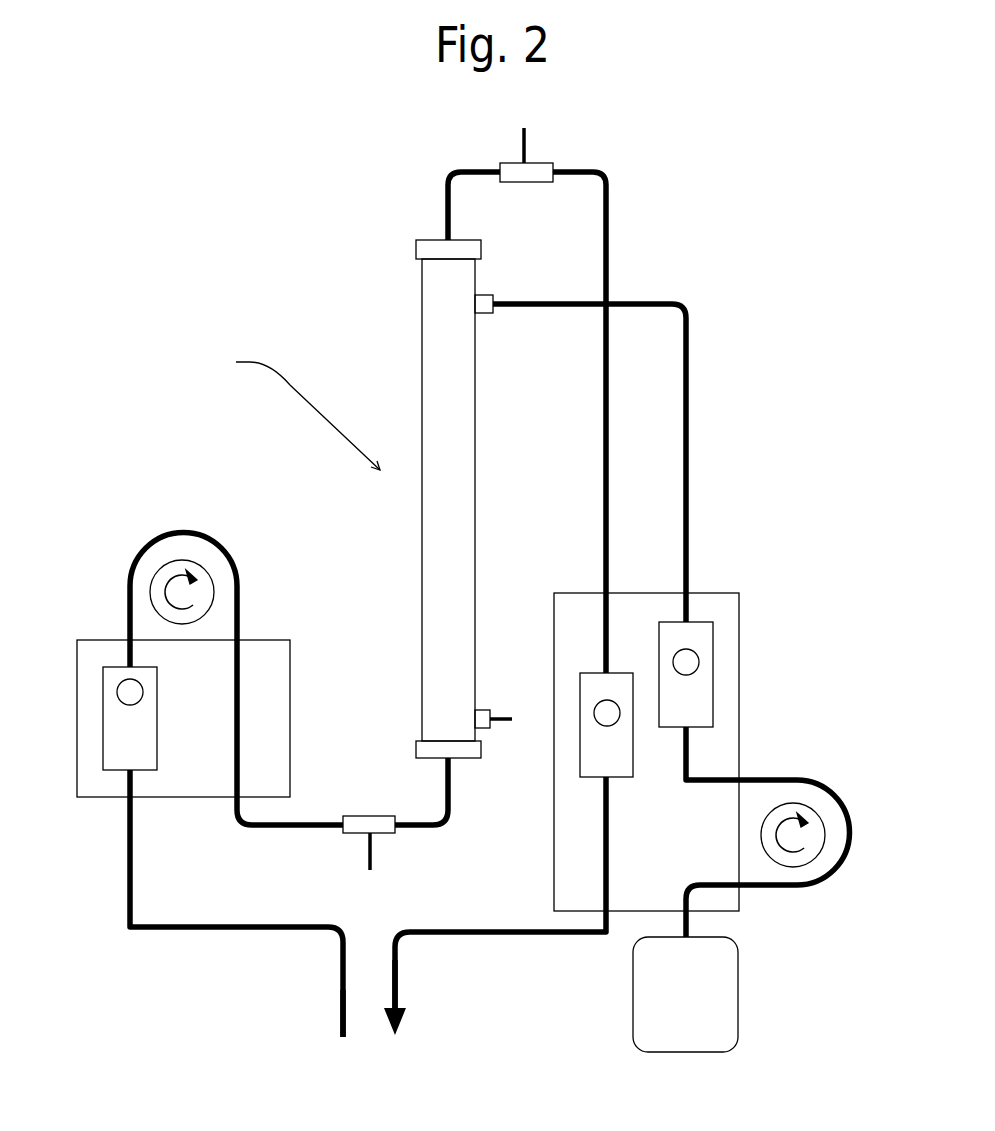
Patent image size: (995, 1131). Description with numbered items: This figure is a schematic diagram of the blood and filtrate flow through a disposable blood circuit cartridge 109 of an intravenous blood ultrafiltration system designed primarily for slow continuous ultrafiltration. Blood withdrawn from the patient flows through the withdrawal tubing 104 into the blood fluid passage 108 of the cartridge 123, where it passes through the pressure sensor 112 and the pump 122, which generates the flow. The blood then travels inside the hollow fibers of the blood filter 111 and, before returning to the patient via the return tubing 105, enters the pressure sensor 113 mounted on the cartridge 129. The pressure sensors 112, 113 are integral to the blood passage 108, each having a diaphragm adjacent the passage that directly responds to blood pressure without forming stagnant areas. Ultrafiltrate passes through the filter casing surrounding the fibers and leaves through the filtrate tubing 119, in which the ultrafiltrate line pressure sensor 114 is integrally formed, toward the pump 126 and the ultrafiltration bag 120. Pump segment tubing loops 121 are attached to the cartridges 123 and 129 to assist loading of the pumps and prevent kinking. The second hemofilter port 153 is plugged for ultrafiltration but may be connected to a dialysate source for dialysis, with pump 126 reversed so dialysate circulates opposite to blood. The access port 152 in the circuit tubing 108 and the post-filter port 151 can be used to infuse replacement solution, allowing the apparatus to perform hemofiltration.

The withdrawal tubing 104 is at (337, 1000).
The return tubing 105 is at (402, 993).
The blood fluid passage 108 is at (612, 257).
The disposable blood circuit cartridge 109 is at (291, 410).
The blood filter 111 is at (440, 317).
The pressure sensor 112 is at (140, 728).
The pressure sensor 113 is at (602, 760).
The ultrafiltrate line pressure sensor 114 is at (703, 643).
The filtrate tubing 119 is at (688, 372).
The ultrafiltration bag 120 is at (685, 993).
The pump segment tubing loops 121 is at (172, 548).
The pump 122 is at (182, 602).
The cartridge 123 is at (263, 688).
The pump 126 is at (798, 838).
The cartridge 129 is at (640, 610).
The post-filter port 151 is at (525, 167).
The access port 152 is at (368, 826).
The second hemofilter port 153 is at (484, 710).